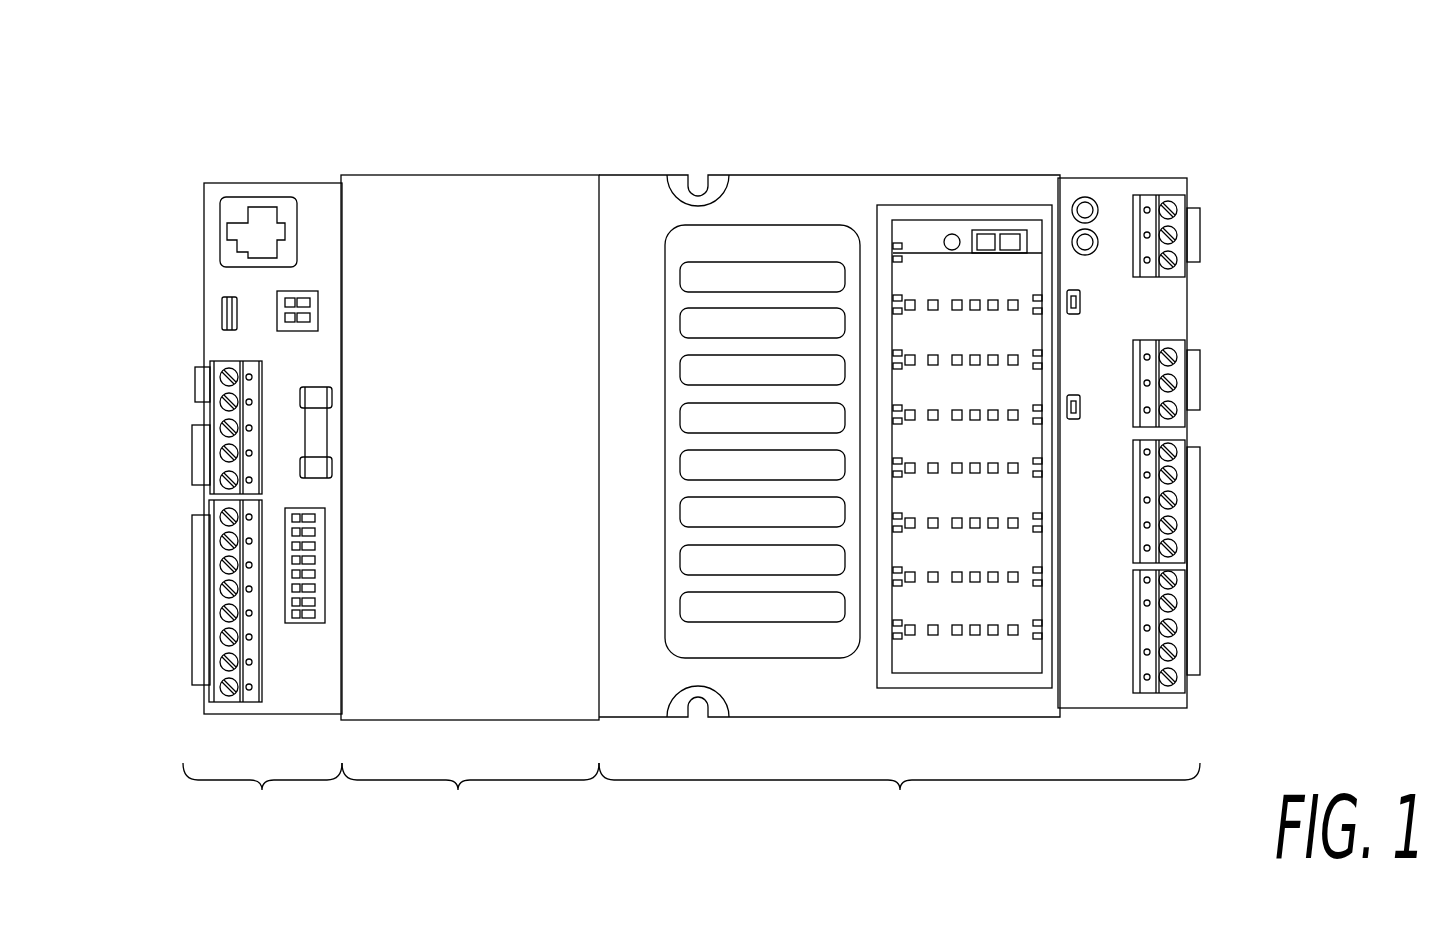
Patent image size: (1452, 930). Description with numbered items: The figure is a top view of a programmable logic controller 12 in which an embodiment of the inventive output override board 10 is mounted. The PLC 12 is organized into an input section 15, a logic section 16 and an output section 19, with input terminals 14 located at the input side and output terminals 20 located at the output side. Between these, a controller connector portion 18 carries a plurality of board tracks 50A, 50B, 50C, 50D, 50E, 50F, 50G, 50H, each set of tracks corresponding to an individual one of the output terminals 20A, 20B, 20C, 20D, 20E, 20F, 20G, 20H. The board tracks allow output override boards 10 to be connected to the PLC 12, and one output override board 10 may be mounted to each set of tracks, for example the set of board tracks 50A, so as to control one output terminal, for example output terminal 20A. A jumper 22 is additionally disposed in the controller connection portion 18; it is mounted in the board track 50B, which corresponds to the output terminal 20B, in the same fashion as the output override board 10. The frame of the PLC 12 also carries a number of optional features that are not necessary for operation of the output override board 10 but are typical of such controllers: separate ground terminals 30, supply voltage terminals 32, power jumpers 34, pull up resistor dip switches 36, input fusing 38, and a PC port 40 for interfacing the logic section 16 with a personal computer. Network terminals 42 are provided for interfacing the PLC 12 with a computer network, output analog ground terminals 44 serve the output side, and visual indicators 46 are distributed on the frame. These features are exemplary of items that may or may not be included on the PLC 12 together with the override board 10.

The output override board 10 is at (923, 250).
The programmable logic controller 12 is at (545, 150).
The input terminals 14 is at (192, 560).
The input section 15 is at (262, 799).
The logic section 16 is at (470, 799).
The controller connector portion 18 is at (985, 688).
The output section 19 is at (899, 799).
The output terminals 20 is at (1200, 446).
The output terminal 20A is at (1178, 453).
The output terminal 20B is at (1177, 473).
The output terminal 20C is at (1177, 524).
The output terminal 20D is at (1177, 547).
The output terminal 20E is at (1177, 579).
The output terminal 20F is at (1177, 603).
The output terminal 20G is at (1177, 650).
The output terminal 20H is at (1177, 678).
The jumper 22 is at (920, 283).
The ground terminals 30 is at (192, 452).
The supply voltage terminals 32 is at (195, 380).
The power jumpers 34 is at (318, 305).
The pull up resistor dip switches 36 is at (305, 623).
The input fusing 38 is at (318, 386).
The PC port 40 is at (243, 212).
The network terminals 42 is at (1200, 226).
The output analog ground terminals 44 is at (1200, 360).
The visual indicators 46 is at (222, 306).
The board track 50A is at (1035, 262).
The board track 50B is at (1035, 316).
The board track 50C is at (1035, 371).
The board track 50D is at (1035, 426).
The board track 50E is at (1035, 479).
The board track 50F is at (1035, 534).
The board track 50G is at (1035, 588).
The board track 50H is at (1035, 641).